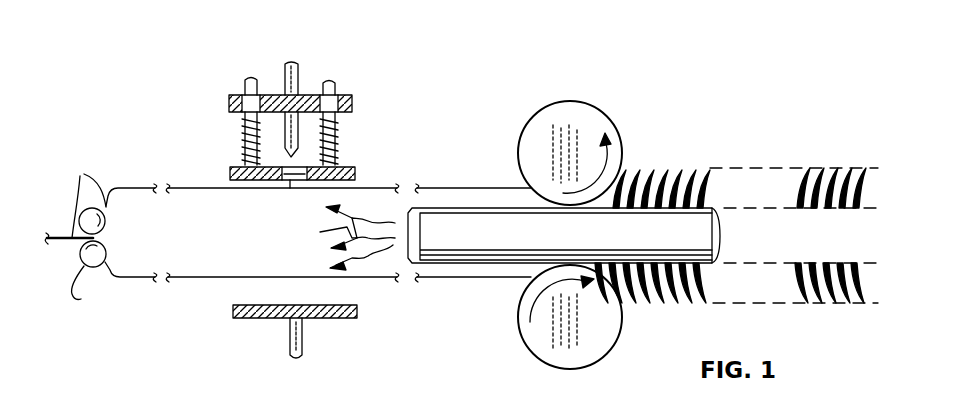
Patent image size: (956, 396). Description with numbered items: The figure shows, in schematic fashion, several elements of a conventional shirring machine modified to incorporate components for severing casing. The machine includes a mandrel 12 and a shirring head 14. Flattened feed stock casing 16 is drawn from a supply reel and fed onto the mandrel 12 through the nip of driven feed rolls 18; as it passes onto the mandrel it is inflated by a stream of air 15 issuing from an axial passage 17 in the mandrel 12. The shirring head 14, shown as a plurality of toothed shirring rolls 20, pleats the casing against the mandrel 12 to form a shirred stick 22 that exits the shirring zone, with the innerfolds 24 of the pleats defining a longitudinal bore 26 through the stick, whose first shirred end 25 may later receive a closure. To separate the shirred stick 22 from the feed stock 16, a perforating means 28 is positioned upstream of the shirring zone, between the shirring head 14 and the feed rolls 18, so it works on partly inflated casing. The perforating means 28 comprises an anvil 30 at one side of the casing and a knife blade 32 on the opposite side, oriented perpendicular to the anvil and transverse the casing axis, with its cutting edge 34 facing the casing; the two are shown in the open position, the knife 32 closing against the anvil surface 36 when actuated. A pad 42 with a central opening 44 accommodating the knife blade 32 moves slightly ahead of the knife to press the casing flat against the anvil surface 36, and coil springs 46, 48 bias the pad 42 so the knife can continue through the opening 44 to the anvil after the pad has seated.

The mandrel 12 is at (718, 264).
The shirring head 14 is at (586, 82).
The stream of air 15 is at (320, 232).
The flattened feed stock casing 16 is at (80, 176).
The axial passage 17 is at (718, 238).
The driven feed rolls 18 is at (93, 276).
The toothed shirring rolls 20 is at (608, 115).
The shirred stick 22 is at (688, 170).
The innerfolds 24 is at (690, 213).
The first shirred end 25 is at (870, 182).
The longitudinal bore 26 is at (808, 208).
The perforating means 28 is at (222, 72).
The anvil 30 is at (270, 320).
The knife blade 32 is at (307, 120).
The knife cutting edge 34 is at (247, 163).
The anvil surface 36 is at (245, 304).
The pad 42 is at (353, 175).
The central opening 44 is at (291, 190).
The coil spring 46 is at (243, 130).
The coil spring 48 is at (343, 140).